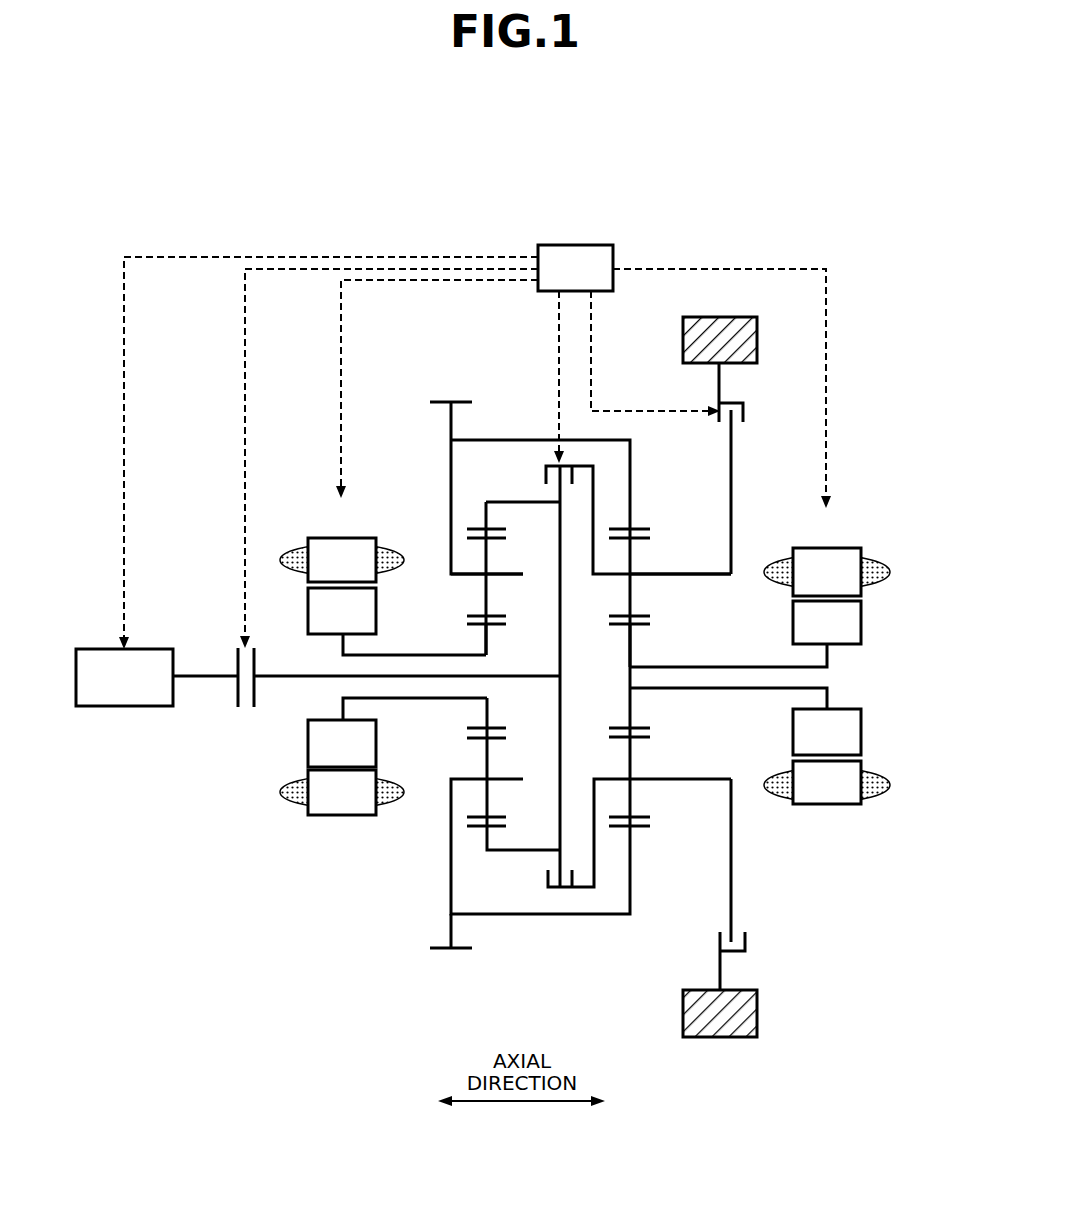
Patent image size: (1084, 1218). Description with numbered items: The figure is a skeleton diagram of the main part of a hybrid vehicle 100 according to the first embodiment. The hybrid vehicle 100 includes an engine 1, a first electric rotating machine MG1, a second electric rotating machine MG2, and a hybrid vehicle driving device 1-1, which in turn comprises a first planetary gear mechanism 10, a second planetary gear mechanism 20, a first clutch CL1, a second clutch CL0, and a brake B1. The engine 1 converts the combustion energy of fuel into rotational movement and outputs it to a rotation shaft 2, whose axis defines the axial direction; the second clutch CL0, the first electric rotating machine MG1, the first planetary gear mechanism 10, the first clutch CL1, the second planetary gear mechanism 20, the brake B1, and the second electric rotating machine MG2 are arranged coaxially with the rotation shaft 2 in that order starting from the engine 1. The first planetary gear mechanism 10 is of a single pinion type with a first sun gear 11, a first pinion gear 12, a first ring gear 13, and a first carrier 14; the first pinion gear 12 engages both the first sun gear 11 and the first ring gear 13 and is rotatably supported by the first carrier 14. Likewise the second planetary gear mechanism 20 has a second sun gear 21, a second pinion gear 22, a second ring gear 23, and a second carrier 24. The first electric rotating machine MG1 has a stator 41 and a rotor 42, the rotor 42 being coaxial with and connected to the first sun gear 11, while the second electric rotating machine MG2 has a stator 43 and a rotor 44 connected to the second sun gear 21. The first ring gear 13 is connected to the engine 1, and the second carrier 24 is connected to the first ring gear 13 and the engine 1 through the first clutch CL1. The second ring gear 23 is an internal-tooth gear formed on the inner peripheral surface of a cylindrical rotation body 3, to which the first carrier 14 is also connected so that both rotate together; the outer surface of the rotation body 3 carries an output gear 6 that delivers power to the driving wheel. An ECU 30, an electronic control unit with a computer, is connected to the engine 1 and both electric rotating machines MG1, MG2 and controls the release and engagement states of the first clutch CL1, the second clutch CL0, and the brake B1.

The hybrid vehicle 100 is at (286, 155).
The hybrid vehicle driving device 1-1 is at (496, 214).
The ECU 30 is at (572, 244).
The engine 1 is at (93, 648).
The rotation shaft 2 is at (203, 675).
The rotation body 3 is at (515, 438).
The output gear 6 is at (441, 401).
The first planetary gear mechanism 10 is at (480, 656).
The first sun gear 11 is at (507, 624).
The first pinion gear 12 is at (467, 620).
The first ring gear 13 is at (467, 530).
The first carrier 14 is at (467, 575).
The second planetary gear mechanism 20 is at (659, 642).
The second sun gear 21 is at (612, 624).
The second pinion gear 22 is at (650, 621).
The second ring gear 23 is at (650, 531).
The second carrier 24 is at (694, 574).
The stator 41 is at (297, 546).
The rotor 42 is at (308, 612).
The stator 43 is at (890, 572).
The rotor 44 is at (861, 627).
The second clutch CL0 is at (244, 722).
The first clutch CL1 is at (536, 469).
The brake B1 is at (747, 427).
The first electric rotating machine MG1 is at (371, 658).
The second electric rotating machine MG2 is at (786, 661).